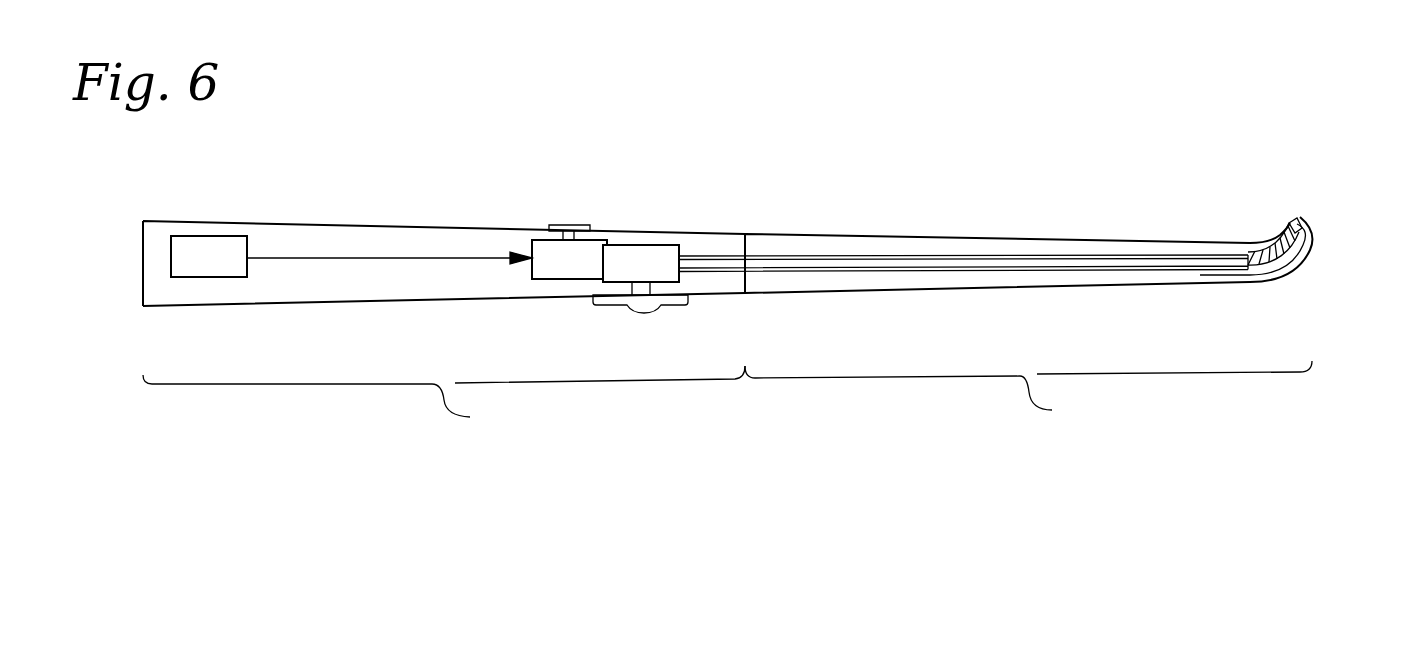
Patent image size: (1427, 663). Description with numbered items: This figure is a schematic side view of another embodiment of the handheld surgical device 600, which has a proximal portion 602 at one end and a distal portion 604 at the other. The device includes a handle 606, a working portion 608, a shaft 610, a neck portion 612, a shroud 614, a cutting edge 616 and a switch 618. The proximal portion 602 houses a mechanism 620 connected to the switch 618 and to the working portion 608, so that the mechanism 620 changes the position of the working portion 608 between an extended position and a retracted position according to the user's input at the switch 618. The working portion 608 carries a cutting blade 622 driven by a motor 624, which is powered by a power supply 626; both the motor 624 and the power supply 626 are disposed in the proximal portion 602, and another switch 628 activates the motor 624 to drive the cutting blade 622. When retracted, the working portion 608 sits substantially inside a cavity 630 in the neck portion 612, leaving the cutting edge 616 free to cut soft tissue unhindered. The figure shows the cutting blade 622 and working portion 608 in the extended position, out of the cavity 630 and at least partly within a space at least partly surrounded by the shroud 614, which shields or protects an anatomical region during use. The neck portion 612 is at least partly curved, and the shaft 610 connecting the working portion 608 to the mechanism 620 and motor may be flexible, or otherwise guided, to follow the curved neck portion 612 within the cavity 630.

The handheld surgical device 600 is at (528, 155).
The proximal portion 602 is at (444, 399).
The distal portion 604 is at (1028, 393).
The handle 606 is at (323, 222).
The working portion 608 is at (1298, 218).
The shaft 610 is at (1143, 268).
The neck portion 612 is at (918, 237).
The shroud 614 is at (1284, 268).
The cutting edge 616 is at (1306, 232).
The switch 618 is at (646, 313).
The mechanism 620 is at (641, 263).
The cutting blade 622 is at (1287, 221).
The motor 624 is at (569, 259).
The power supply 626 is at (351, 256).
The switch 628 is at (563, 225).
The cavity 630 is at (1027, 272).